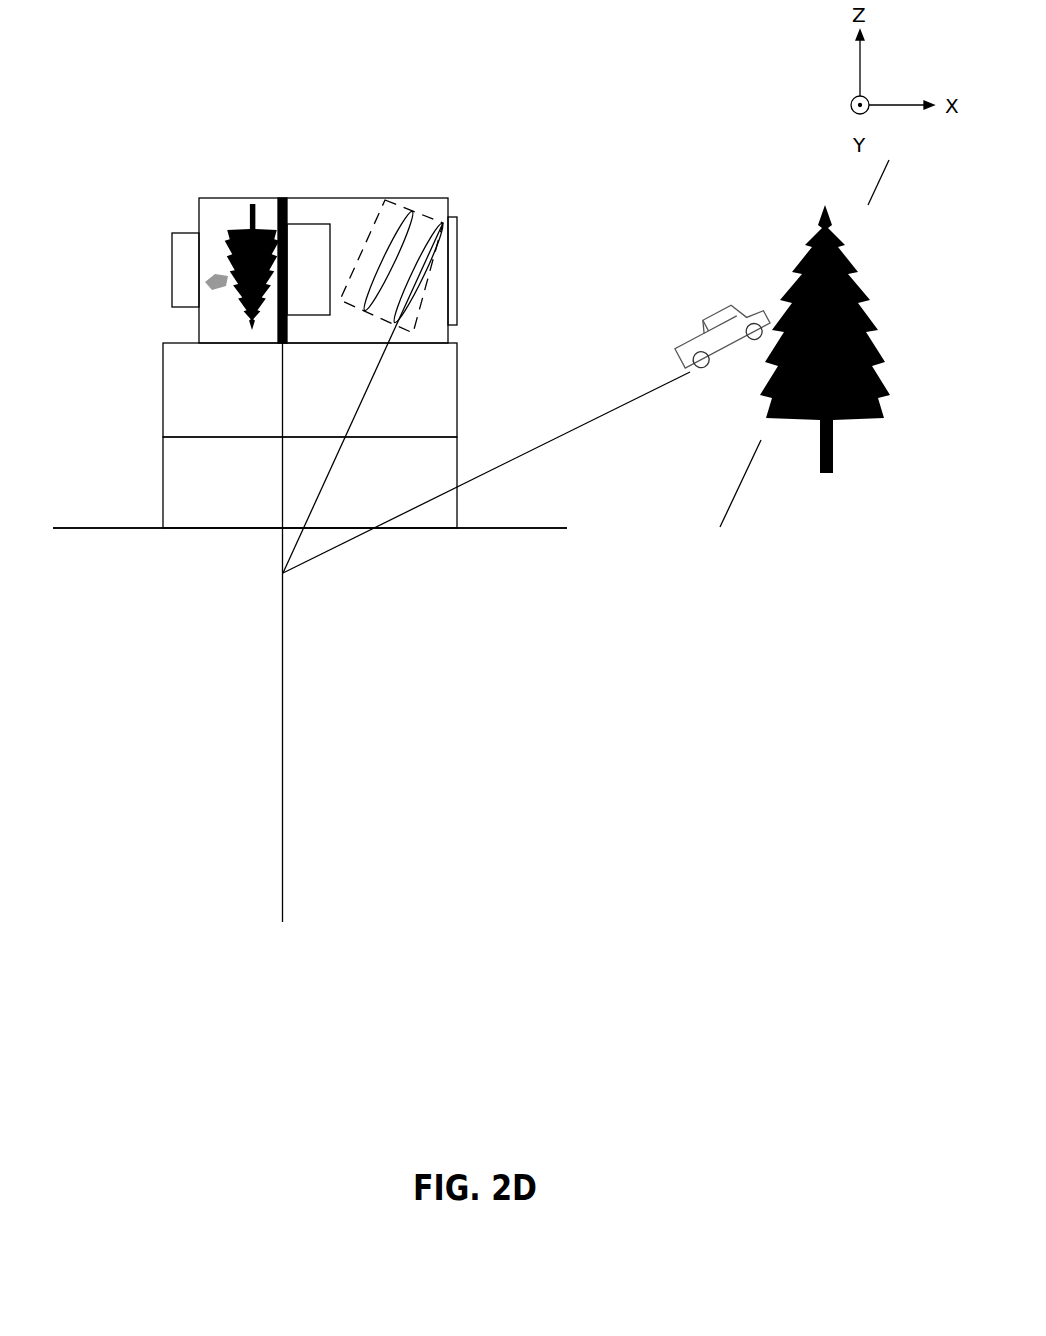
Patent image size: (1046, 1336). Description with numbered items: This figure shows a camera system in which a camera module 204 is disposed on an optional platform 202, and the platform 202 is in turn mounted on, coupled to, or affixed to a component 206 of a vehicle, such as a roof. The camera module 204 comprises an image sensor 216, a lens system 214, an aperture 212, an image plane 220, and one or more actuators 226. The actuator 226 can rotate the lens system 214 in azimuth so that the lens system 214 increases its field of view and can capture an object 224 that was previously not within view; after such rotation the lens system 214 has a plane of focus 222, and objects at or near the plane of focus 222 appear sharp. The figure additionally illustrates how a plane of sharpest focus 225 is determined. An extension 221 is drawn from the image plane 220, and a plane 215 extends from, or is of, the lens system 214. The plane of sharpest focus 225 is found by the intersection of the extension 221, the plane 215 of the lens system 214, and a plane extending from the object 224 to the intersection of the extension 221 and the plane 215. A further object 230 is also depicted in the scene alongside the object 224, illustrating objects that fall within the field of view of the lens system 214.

The platform 202 is at (160, 493).
The camera module 204 is at (198, 219).
The component of a vehicle 206 is at (549, 527).
The aperture 212 is at (470, 246).
The lens system 214 is at (402, 200).
The plane of the lens system 215 is at (365, 397).
The image sensor 216 is at (306, 224).
The image plane 220 is at (280, 218).
The extension from the image plane 221 is at (282, 665).
The plane of focus 222 is at (762, 438).
The object 224 is at (790, 277).
The plane of sharpest focus 225 is at (593, 418).
The actuator 226 is at (170, 279).
The vehicle object 230 is at (707, 323).